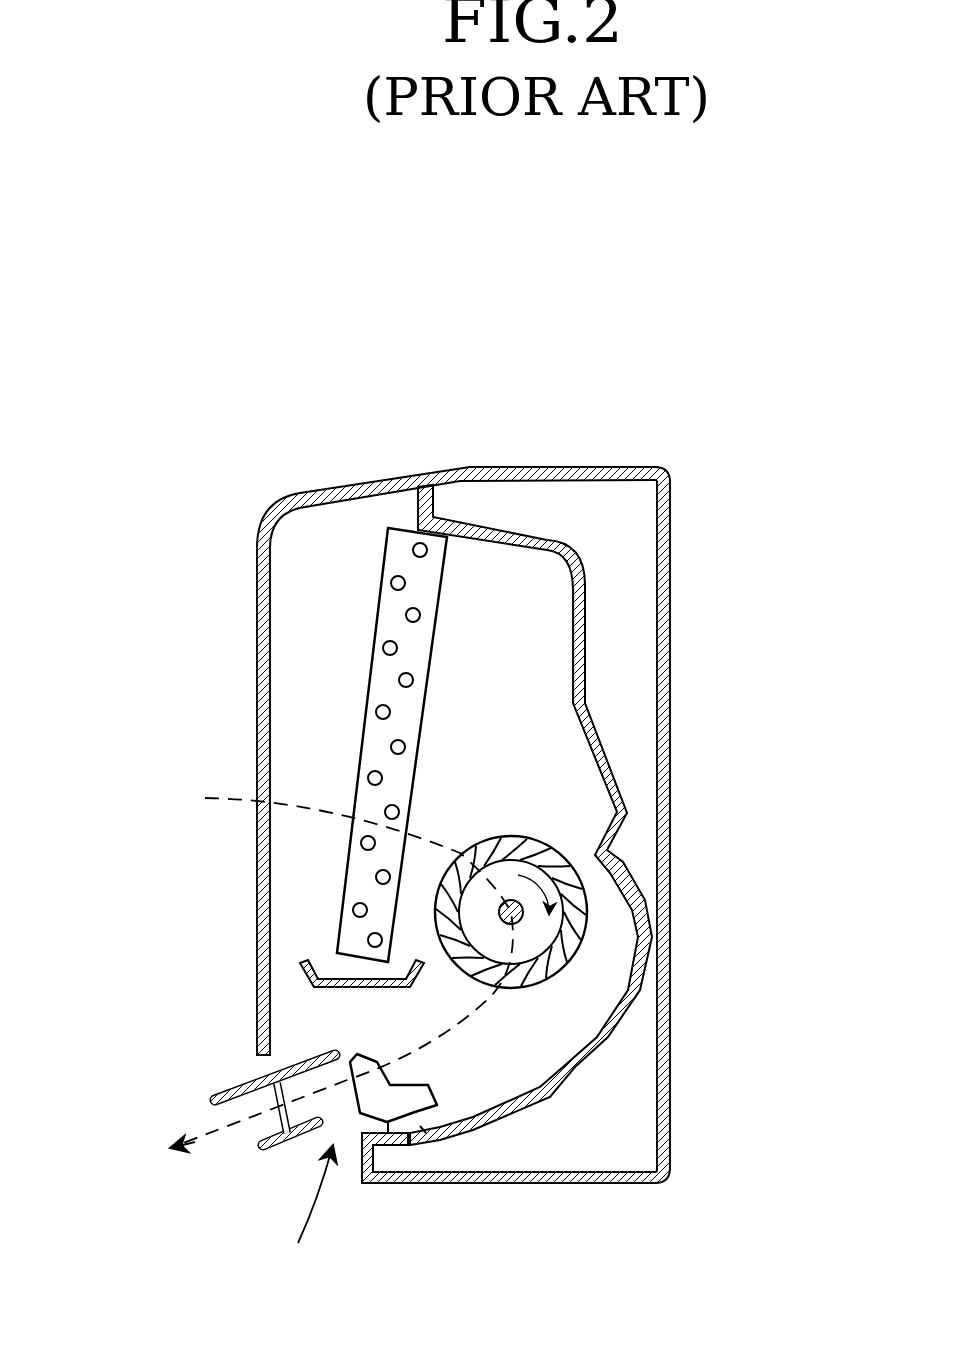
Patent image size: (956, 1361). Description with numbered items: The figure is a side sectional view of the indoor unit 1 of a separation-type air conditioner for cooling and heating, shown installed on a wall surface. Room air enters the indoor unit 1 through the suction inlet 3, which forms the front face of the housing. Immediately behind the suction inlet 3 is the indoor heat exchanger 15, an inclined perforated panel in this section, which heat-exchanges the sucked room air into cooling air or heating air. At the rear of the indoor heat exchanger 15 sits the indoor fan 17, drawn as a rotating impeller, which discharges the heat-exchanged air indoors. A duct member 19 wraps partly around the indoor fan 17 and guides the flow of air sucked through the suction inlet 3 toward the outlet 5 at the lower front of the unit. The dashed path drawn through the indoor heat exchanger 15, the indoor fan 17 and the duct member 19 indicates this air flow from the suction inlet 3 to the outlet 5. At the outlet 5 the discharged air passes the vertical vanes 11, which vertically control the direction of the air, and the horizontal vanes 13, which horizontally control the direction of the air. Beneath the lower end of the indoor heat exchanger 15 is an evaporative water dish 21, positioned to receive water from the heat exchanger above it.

The indoor unit 1 is at (688, 593).
The suction inlet 3 is at (260, 662).
The outlet 5 is at (308, 1215).
The vertical vanes 11 is at (220, 1100).
The horizontal vanes 13 is at (407, 1107).
The indoor heat exchanger 15 is at (398, 540).
The indoor fan 17 is at (578, 924).
The duct member 19 is at (590, 737).
The evaporative water dish 21 is at (302, 977).